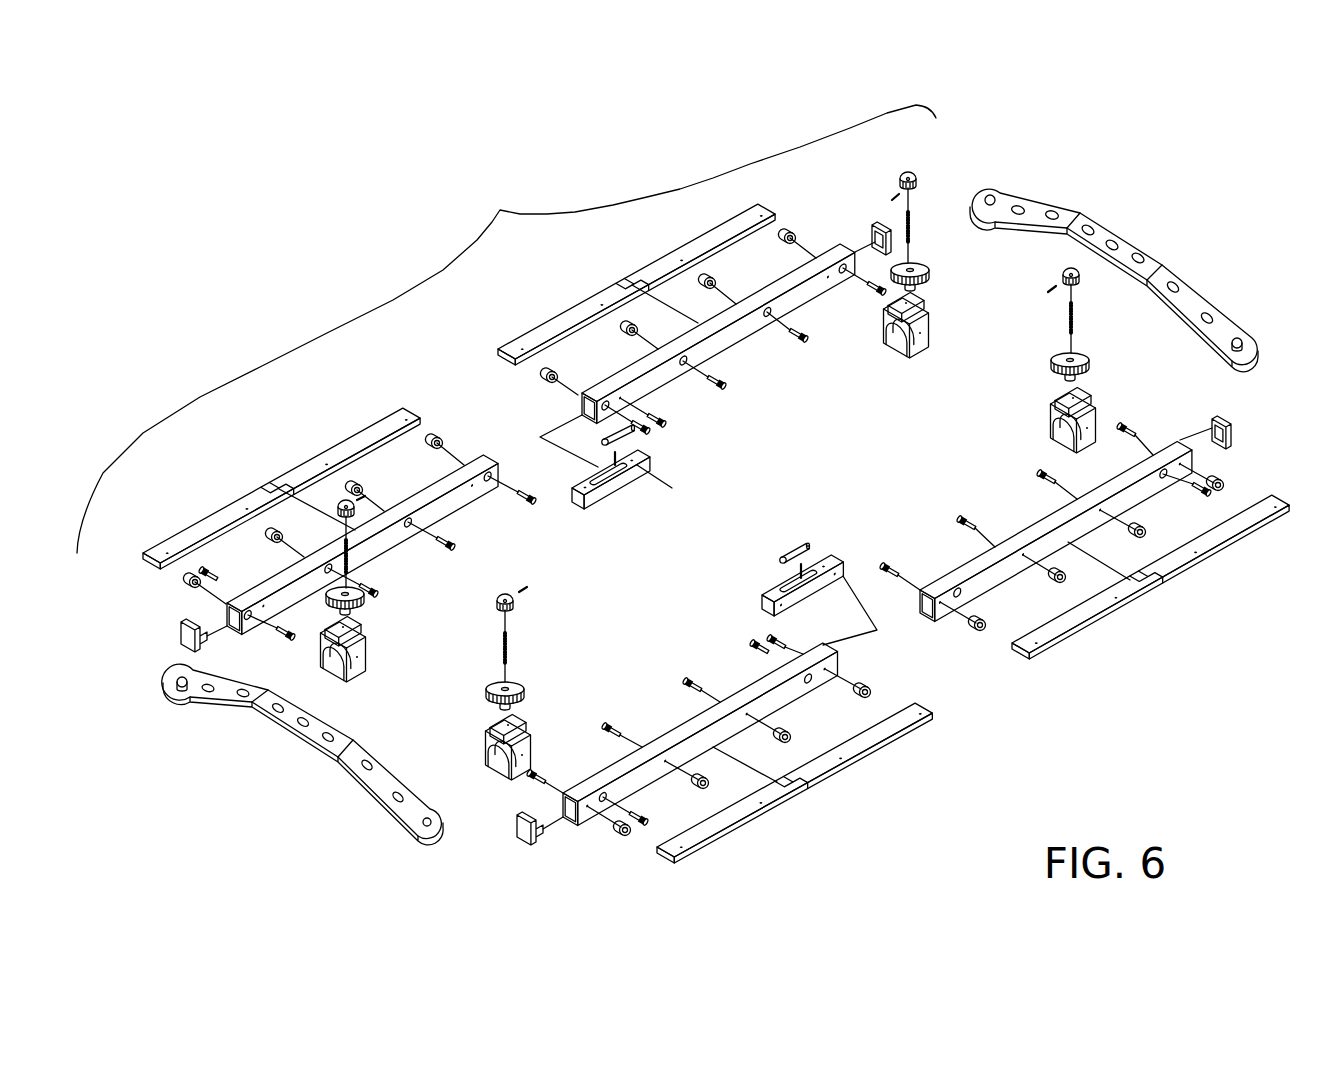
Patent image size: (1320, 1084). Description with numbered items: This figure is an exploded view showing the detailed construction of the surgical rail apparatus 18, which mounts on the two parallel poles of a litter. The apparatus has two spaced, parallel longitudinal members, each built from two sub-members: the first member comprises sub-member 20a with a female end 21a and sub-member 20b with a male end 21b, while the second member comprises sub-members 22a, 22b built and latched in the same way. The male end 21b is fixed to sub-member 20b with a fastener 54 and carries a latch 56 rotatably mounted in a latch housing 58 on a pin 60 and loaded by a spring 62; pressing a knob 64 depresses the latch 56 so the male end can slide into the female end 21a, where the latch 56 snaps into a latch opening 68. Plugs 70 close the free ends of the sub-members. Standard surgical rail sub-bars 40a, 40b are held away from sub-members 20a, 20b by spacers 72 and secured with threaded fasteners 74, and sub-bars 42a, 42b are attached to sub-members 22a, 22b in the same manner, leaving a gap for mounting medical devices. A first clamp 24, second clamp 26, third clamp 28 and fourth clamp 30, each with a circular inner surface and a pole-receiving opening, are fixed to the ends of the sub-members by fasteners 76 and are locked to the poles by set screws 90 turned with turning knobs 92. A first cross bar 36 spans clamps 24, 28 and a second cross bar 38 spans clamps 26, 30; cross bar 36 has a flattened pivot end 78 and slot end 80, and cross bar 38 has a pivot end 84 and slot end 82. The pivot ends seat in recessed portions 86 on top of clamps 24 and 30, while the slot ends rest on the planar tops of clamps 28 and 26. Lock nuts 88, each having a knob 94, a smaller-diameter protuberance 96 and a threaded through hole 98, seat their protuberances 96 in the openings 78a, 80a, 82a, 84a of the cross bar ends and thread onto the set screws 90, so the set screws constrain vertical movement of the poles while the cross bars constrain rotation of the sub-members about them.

The surgical rail apparatus 18 is at (502, 210).
The sub-member 20a is at (1056, 550).
The sub-member 20b is at (672, 730).
The female end 21a is at (937, 615).
The male end 21b is at (845, 560).
The sub-member 22a is at (455, 498).
The sub-member 22b is at (738, 330).
The first clamp 24 is at (530, 733).
The second clamp 26 is at (1052, 440).
The third clamp 28 is at (360, 674).
The fourth clamp 30 is at (913, 348).
The first cross bar 36 is at (287, 770).
The second cross bar 38 is at (1125, 250).
The sub-bar 40a is at (1090, 612).
The sub-bar 40b is at (720, 830).
The sub-bar 42a is at (725, 232).
The sub-bar 42b is at (186, 532).
The fastener 54 is at (753, 647).
The latch 56 is at (808, 543).
The latch housing 58 is at (798, 563).
The pin 60 is at (778, 587).
The spring 62 is at (803, 565).
The knob 64 is at (805, 546).
The latch opening 68 is at (930, 588).
The plug 70 is at (1225, 420).
The spacer 72 is at (1228, 480).
The threaded fastener 74 is at (692, 685).
The fastener 76 is at (210, 570).
The pivot end 78 is at (410, 828).
The opening 78a is at (428, 826).
The slot end 80 is at (168, 676).
The opening 80a is at (184, 690).
The slot end 82 is at (1256, 356).
The opening 82a is at (1239, 338).
The pivot end 84 is at (998, 198).
The opening 84a is at (988, 196).
The recessed portion 86 is at (897, 320).
The lock nut 88 is at (1052, 356).
The set screw 90 is at (912, 238).
The turning knob 92 is at (904, 176).
The knob 94 is at (922, 268).
The protuberance 96 is at (1058, 382).
The threaded through hole 98 is at (1082, 358).